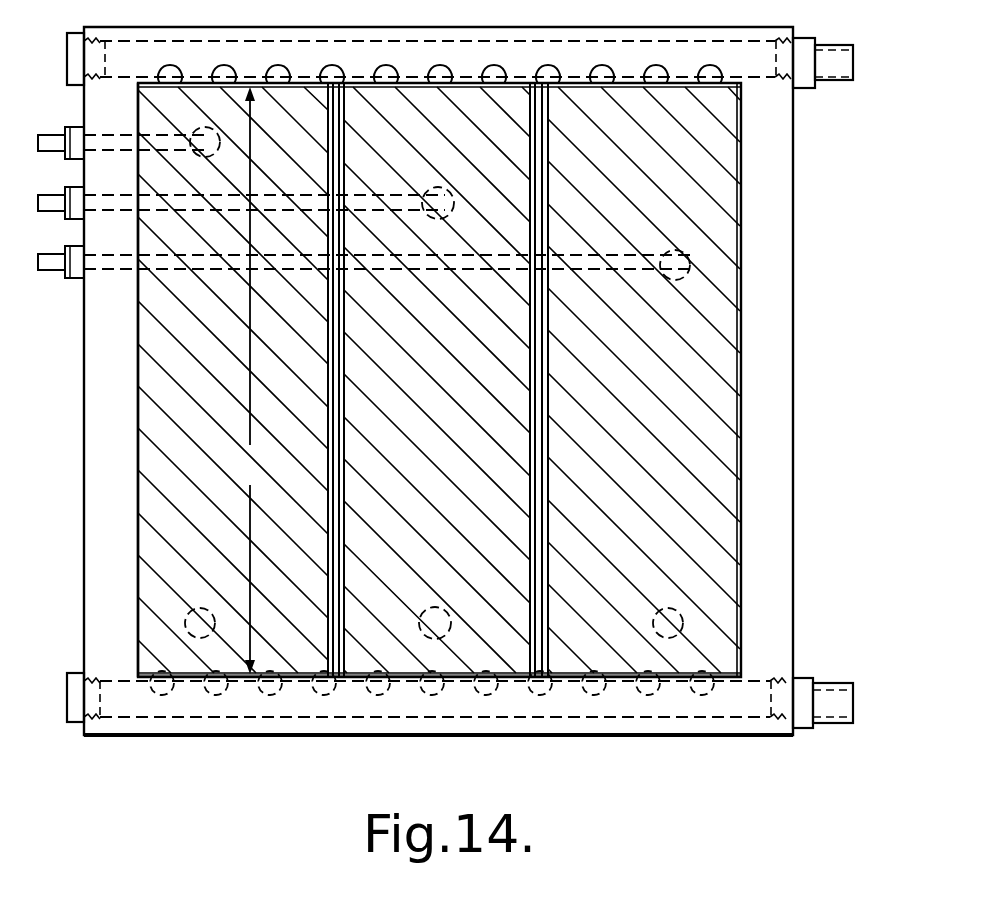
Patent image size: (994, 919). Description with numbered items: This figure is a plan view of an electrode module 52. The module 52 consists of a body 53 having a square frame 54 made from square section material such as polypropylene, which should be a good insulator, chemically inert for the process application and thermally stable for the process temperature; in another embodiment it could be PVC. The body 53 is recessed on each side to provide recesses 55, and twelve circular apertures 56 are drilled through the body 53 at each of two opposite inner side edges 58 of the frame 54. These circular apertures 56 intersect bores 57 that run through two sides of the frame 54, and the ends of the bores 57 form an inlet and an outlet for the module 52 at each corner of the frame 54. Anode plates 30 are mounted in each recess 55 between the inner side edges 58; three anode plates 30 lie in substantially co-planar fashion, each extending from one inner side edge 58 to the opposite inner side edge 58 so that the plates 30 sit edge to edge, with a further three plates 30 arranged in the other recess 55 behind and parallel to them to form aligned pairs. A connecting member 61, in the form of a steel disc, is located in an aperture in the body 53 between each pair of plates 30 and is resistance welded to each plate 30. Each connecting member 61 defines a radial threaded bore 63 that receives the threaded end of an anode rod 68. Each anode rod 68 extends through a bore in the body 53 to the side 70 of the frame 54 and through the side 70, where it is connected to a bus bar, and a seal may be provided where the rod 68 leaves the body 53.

The anode plate 30 is at (212, 515).
The electrode module 52 is at (383, 733).
The body 53 is at (117, 428).
The square frame 54 is at (588, 708).
The recess 55 is at (245, 678).
The circular aperture 56 is at (380, 676).
The bore 57 is at (837, 68).
The inner side edge 58 is at (244, 380).
The connecting member 61 is at (672, 277).
The threaded bore 63 is at (658, 264).
The anode rod 68 is at (520, 255).
The side of the frame 70 is at (138, 297).